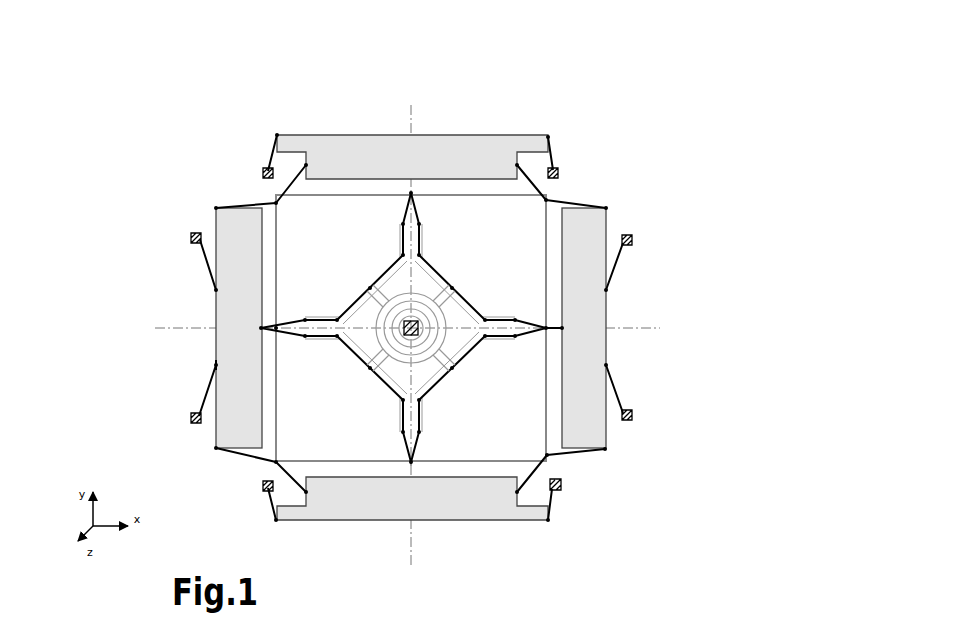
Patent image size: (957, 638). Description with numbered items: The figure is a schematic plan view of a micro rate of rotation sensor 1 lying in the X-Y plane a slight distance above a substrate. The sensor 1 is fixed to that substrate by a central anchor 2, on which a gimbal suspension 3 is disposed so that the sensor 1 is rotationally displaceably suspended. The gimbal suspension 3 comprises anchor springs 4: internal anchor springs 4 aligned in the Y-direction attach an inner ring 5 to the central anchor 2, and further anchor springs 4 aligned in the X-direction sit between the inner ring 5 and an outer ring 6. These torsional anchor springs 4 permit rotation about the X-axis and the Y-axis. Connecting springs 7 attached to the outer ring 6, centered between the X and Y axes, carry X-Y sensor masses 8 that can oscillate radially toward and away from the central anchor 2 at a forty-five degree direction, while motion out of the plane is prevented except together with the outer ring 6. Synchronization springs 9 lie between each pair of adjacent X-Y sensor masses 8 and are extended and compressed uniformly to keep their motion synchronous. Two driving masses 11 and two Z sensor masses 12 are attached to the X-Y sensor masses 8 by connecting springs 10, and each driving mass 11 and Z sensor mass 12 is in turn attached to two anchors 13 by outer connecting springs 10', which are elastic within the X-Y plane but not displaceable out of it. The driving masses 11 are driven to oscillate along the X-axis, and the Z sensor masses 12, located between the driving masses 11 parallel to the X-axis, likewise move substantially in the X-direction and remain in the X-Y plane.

The micro rate of rotation sensor 1 is at (670, 162).
The central anchor 2 is at (402, 294).
The gimbal suspension 3 is at (465, 346).
The anchor springs 4 is at (417, 367).
The inner ring 5 is at (305, 338).
The outer ring 6 is at (232, 314).
The connecting springs 7 is at (412, 300).
The X-Y sensor masses 8 is at (355, 212).
The synchronization springs 9 is at (423, 202).
The connecting springs 10 is at (403, 307).
The outer connecting springs 10' is at (419, 313).
The driving masses 11 is at (603, 318).
The Z sensor masses 12 is at (398, 150).
The anchors 13 is at (268, 167).